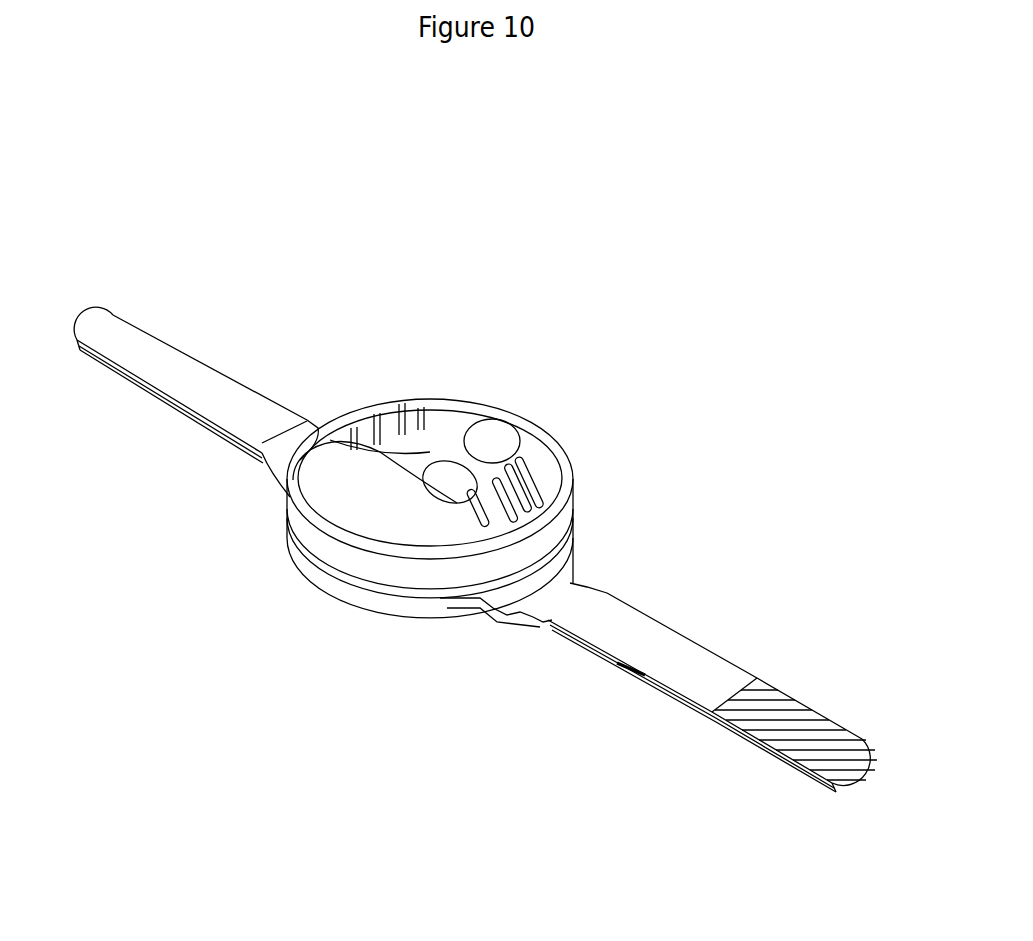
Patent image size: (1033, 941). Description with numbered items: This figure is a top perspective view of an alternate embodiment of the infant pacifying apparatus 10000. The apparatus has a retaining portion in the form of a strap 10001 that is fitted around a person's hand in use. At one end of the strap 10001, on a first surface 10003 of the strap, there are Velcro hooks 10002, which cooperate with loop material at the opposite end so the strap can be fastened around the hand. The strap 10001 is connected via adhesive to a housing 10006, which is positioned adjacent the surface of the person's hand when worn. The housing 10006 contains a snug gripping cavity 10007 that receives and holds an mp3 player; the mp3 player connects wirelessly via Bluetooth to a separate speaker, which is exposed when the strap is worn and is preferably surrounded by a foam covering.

The infant pacifying apparatus 10000 is at (621, 477).
The strap 10001 is at (603, 621).
The Velcro hooks 10002 is at (669, 678).
The first surface 10003 is at (705, 664).
The housing 10006 is at (367, 493).
The snug gripping cavity 10007 is at (400, 447).